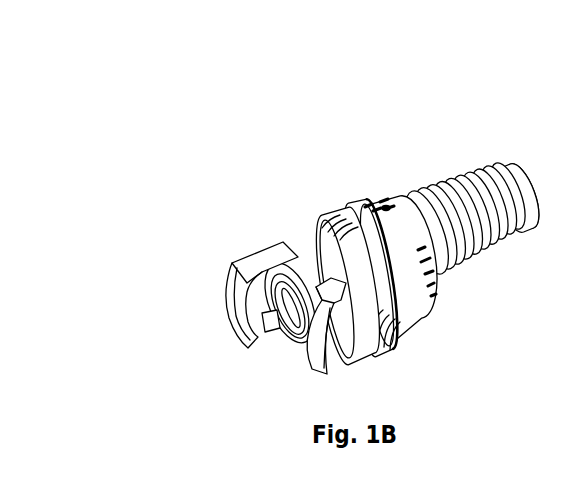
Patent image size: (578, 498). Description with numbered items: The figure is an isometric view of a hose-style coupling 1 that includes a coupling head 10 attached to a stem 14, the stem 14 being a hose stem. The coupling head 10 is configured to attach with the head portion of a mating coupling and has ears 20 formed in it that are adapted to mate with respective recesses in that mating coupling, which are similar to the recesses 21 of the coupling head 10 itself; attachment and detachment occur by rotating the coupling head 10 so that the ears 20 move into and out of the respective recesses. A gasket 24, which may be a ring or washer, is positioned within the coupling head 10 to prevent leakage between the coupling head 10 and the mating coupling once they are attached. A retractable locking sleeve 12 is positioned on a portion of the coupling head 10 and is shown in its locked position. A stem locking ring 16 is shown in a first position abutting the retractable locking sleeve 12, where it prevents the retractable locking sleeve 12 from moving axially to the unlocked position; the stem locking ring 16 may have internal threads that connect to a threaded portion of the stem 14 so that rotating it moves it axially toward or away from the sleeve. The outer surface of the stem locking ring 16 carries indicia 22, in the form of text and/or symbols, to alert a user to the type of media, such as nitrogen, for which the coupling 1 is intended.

The coupling 1 is at (326, 255).
The coupling head 10 is at (245, 257).
The retractable locking sleeve 12 is at (316, 222).
The stem 14 is at (478, 175).
The stem locking ring 16 is at (442, 281).
The ears 20 is at (378, 346).
The recesses 21 is at (336, 284).
The indicia 22 is at (382, 198).
The gasket 24 is at (287, 328).